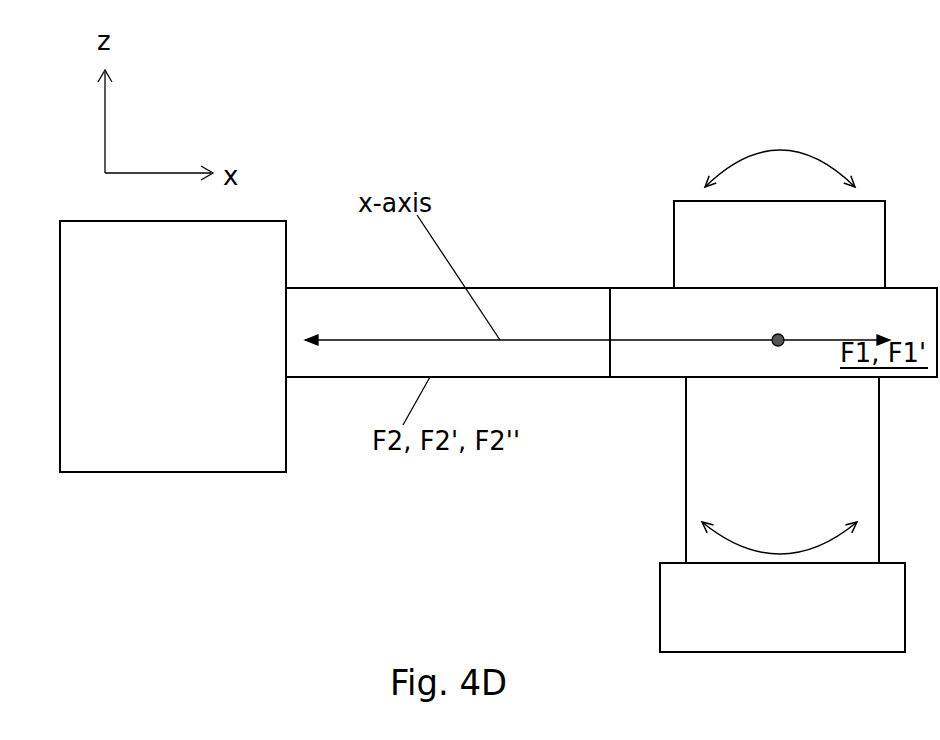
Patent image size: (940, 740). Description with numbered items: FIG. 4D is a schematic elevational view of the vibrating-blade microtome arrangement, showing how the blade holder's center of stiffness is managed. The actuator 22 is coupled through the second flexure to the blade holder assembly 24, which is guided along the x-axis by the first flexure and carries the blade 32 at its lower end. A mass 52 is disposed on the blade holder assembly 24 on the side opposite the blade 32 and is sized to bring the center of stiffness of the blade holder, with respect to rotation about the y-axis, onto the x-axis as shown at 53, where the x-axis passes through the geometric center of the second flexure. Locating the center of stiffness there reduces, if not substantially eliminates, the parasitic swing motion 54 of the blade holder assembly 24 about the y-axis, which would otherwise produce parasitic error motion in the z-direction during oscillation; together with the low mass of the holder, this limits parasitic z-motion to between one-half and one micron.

The actuator 22 is at (235, 367).
The mass 52 is at (757, 278).
The blade holder assembly 24 is at (822, 494).
The blade 32 is at (804, 627).
The center of stiffness location 53 is at (772, 345).
The parasitic swing motion 54 is at (823, 163).